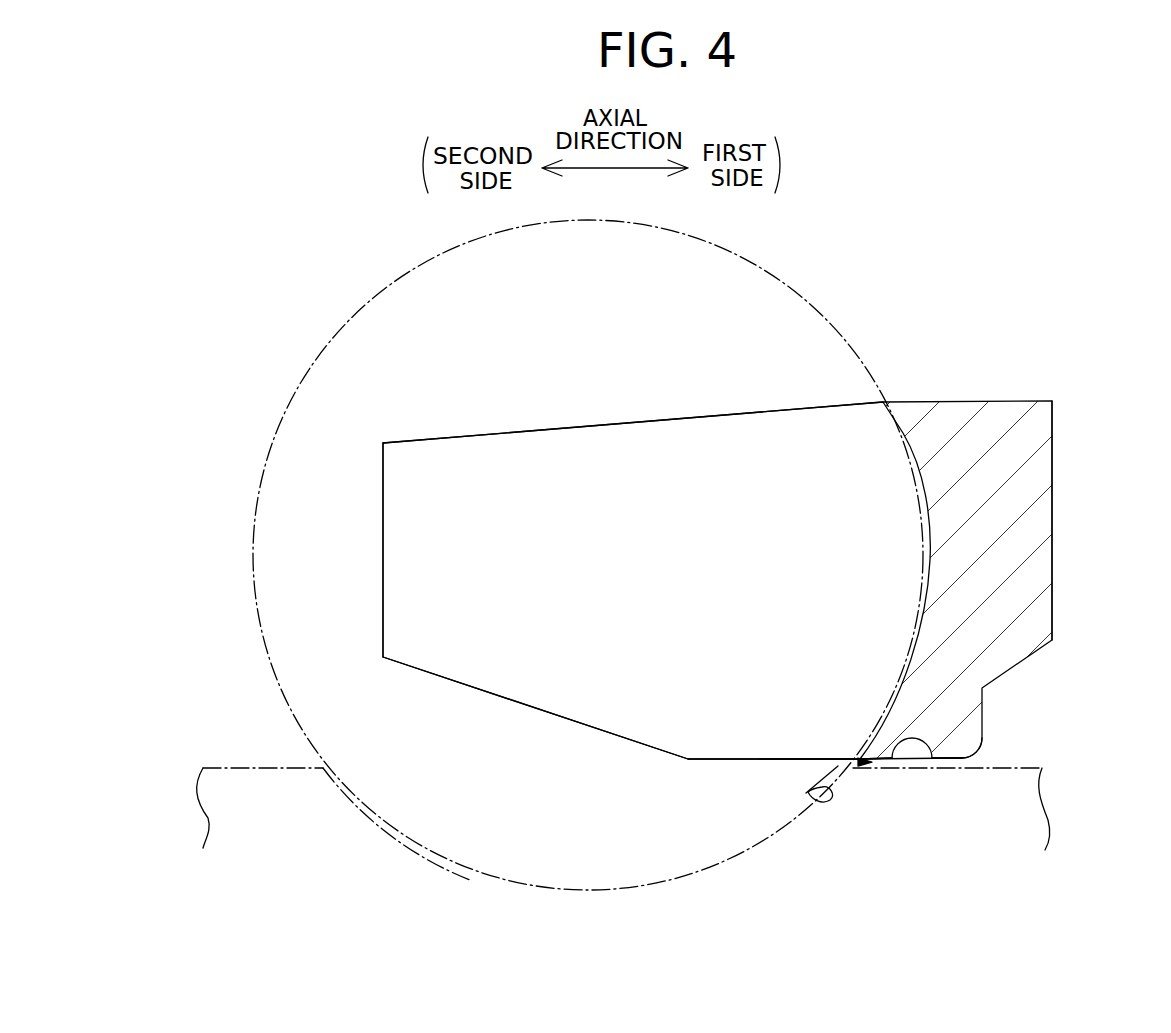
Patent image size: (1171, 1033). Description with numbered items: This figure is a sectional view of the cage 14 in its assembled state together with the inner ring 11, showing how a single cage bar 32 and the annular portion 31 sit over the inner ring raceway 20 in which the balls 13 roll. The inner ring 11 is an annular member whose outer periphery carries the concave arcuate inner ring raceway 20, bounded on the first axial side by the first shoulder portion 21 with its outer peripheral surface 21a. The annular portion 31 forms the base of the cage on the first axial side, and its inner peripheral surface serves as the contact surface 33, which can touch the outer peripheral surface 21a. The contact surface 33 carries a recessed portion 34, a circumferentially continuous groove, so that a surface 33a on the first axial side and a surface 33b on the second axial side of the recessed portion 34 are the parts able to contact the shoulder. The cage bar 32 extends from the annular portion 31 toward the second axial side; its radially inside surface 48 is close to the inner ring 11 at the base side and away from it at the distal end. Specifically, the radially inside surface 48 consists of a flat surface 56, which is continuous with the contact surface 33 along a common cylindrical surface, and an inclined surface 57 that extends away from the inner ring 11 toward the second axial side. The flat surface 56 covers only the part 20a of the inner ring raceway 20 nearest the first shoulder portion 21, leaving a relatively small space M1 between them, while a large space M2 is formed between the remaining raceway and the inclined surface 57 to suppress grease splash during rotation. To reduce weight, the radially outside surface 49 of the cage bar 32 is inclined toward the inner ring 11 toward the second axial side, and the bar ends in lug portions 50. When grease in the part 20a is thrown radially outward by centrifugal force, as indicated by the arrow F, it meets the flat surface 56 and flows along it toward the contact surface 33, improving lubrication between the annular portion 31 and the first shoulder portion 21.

The ball 13 is at (800, 293).
The cage 14 is at (1069, 427).
The annular portion 31 is at (1020, 482).
The cage bar 32 is at (686, 458).
The radially outside surface 49 is at (592, 423).
The lug portion 50 is at (430, 555).
The inclined surface 57 is at (582, 723).
The radially inside surface 48 is at (693, 776).
The flat surface 56 is at (792, 762).
The recessed portion 34 is at (908, 762).
The contact surface 33 is at (967, 858).
The surface on the first axial side 33a is at (942, 762).
The surface on the second axial side 33b is at (880, 764).
The outer peripheral surface 21a is at (988, 768).
The inner ring 11 is at (1057, 789).
The first shoulder portion 21 is at (982, 793).
The inner ring raceway 20 is at (371, 787).
The part of the inner ring raceway 20a is at (836, 796).
The arrow F is at (858, 761).
The space M1 is at (764, 812).
The space M2 is at (479, 798).